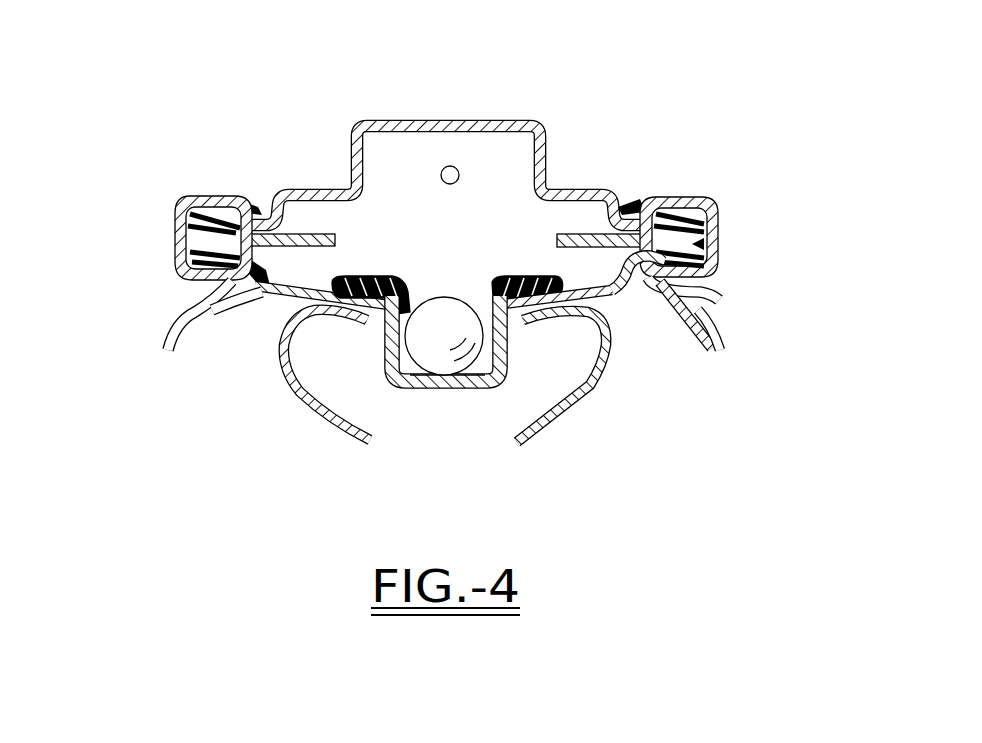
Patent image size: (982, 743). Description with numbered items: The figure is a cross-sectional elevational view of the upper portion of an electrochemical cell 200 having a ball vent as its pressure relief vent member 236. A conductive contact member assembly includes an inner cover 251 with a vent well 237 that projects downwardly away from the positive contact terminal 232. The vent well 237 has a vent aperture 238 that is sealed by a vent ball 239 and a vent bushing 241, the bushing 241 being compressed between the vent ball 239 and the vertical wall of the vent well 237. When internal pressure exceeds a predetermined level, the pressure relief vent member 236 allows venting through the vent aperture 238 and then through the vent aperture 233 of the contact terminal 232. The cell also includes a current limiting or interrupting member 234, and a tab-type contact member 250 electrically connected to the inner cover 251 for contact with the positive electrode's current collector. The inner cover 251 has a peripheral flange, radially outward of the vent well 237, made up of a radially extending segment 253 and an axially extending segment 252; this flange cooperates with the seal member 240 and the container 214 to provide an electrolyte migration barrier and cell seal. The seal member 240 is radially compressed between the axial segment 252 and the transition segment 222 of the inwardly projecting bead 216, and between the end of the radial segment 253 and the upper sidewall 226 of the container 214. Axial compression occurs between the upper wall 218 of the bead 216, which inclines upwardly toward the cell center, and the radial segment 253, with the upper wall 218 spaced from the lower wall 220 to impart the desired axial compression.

The cell 200 is at (311, 135).
The positive contact terminal 232 is at (493, 118).
The vent aperture 233 is at (445, 167).
The current limiting or interrupting member 234 is at (590, 233).
The seal member 240 is at (187, 217).
The upper sidewall 226 is at (187, 199).
The container 214 is at (713, 208).
The radially extending segment 253 is at (704, 244).
The vent well 237 is at (419, 285).
The vent bushing 241 is at (512, 280).
The inner cover 251 is at (614, 303).
The axially extending segment 252 is at (625, 266).
The pressure relief vent member 236 is at (376, 364).
The vent aperture 238 is at (420, 381).
The vent ball 239 is at (447, 373).
The bead 216 is at (194, 294).
The upper wall 218 is at (682, 287).
The transition segment 222 is at (668, 293).
The lower wall 220 is at (695, 310).
The tab-type contact member 250 is at (573, 413).